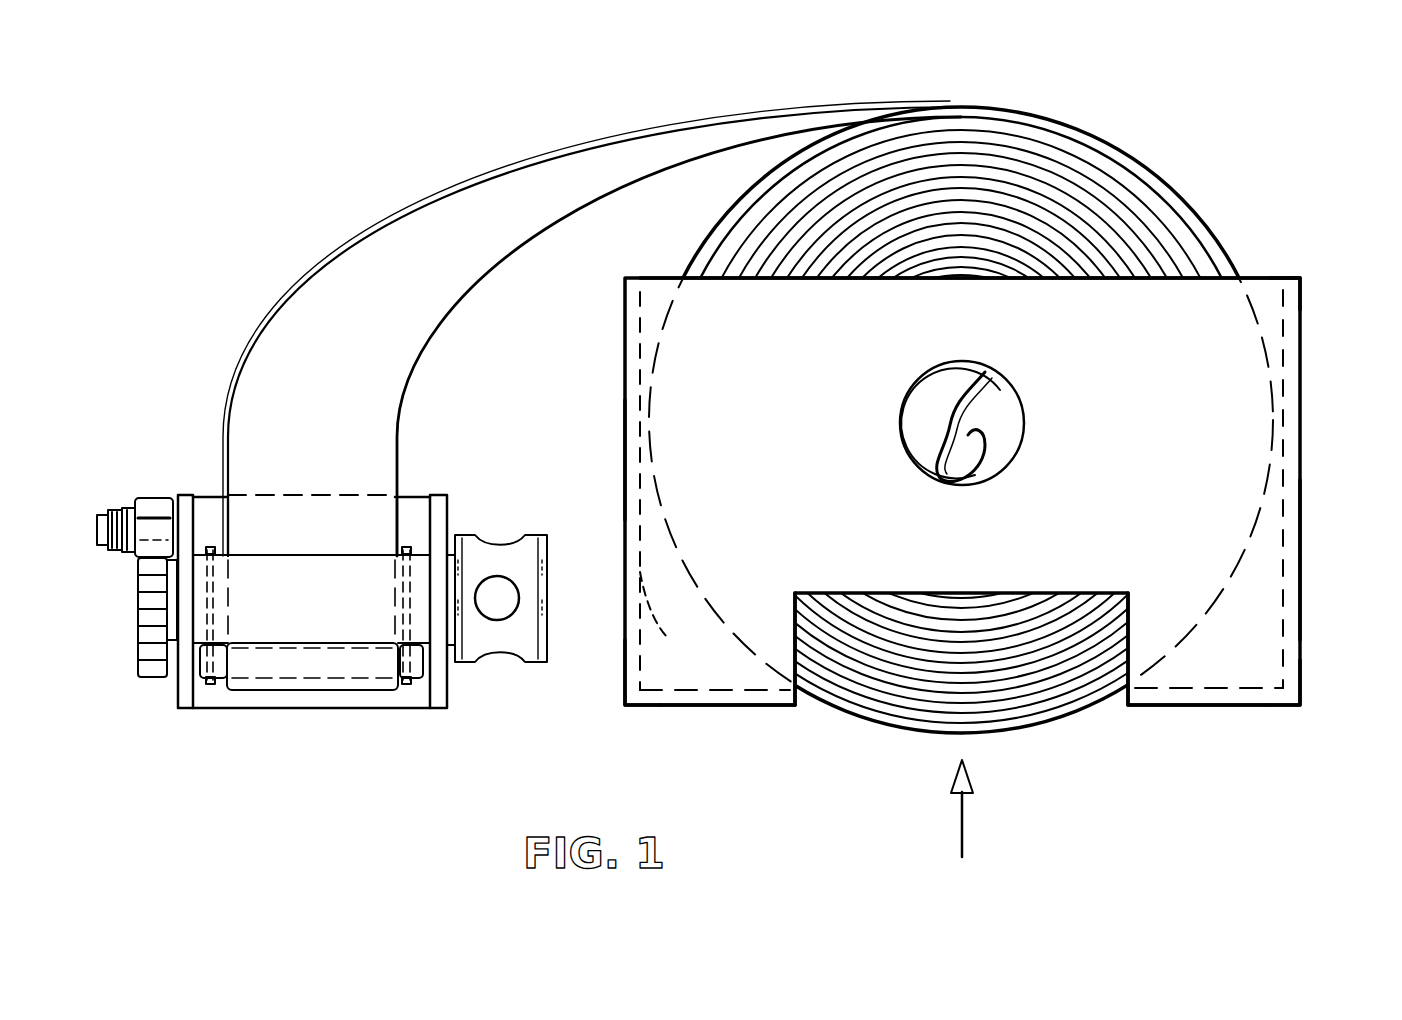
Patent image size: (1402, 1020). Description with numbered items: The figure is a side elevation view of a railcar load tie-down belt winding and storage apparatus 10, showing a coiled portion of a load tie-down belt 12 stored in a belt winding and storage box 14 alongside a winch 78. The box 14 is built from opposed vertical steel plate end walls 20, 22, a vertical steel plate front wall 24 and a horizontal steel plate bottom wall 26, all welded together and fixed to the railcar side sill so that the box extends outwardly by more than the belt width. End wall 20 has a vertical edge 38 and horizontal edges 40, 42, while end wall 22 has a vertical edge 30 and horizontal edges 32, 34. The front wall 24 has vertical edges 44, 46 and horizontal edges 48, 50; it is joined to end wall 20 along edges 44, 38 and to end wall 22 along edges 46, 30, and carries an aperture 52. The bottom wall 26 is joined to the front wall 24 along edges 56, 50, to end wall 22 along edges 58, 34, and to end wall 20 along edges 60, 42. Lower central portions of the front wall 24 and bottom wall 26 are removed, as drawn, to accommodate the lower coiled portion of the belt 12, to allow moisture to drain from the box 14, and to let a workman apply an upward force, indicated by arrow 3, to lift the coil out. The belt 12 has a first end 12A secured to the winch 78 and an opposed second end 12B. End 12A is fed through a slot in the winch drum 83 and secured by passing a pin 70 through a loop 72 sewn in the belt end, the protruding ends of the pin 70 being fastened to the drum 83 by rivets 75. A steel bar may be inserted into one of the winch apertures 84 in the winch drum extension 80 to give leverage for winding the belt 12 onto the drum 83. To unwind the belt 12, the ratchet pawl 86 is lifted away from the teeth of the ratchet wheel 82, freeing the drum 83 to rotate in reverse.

The railcar load tie-down belt winding and storage apparatus 10 is at (305, 133).
The load tie-down belt 12 is at (597, 138).
The first end of belt 12A is at (345, 505).
The second end of belt 12B is at (1010, 430).
The belt winding and storage box 14 is at (930, 456).
The end wall 20 is at (612, 436).
The end wall 22 is at (1303, 472).
The front wall 24 is at (852, 512).
The bottom wall 26 is at (698, 712).
The vertical edge of end wall 22 30 is at (1293, 588).
The horizontal edge of end wall 22 32 is at (1290, 277).
The horizontal edge of end wall 22 34 is at (1293, 710).
The vertical edge of end wall 20 38 is at (660, 612).
The horizontal edge of end wall 20 40 is at (632, 276).
The horizontal edge of end wall 20 42 is at (630, 712).
The vertical edge of front wall 44 is at (618, 472).
The vertical edge of front wall 46 is at (1303, 533).
The horizontal edge of front wall 48 is at (1255, 272).
The horizontal edge of front wall 50 is at (780, 708).
The aperture 52 is at (1003, 396).
The horizontal edge of bottom wall 56 is at (728, 690).
The horizontal edge of bottom wall 58 is at (1302, 690).
The horizontal edge of bottom wall 60 is at (627, 690).
The pin 70 is at (280, 668).
The loop 72 is at (358, 690).
The rivets 75 is at (410, 546).
The winch 78 is at (263, 628).
The winch drum extension 80 is at (529, 629).
The ratchet wheel 82 is at (155, 680).
The winch drum 83 is at (303, 600).
The winch apertures 84 is at (492, 545).
The ratchet pawl 86 is at (150, 498).
The arrow 3 is at (955, 815).